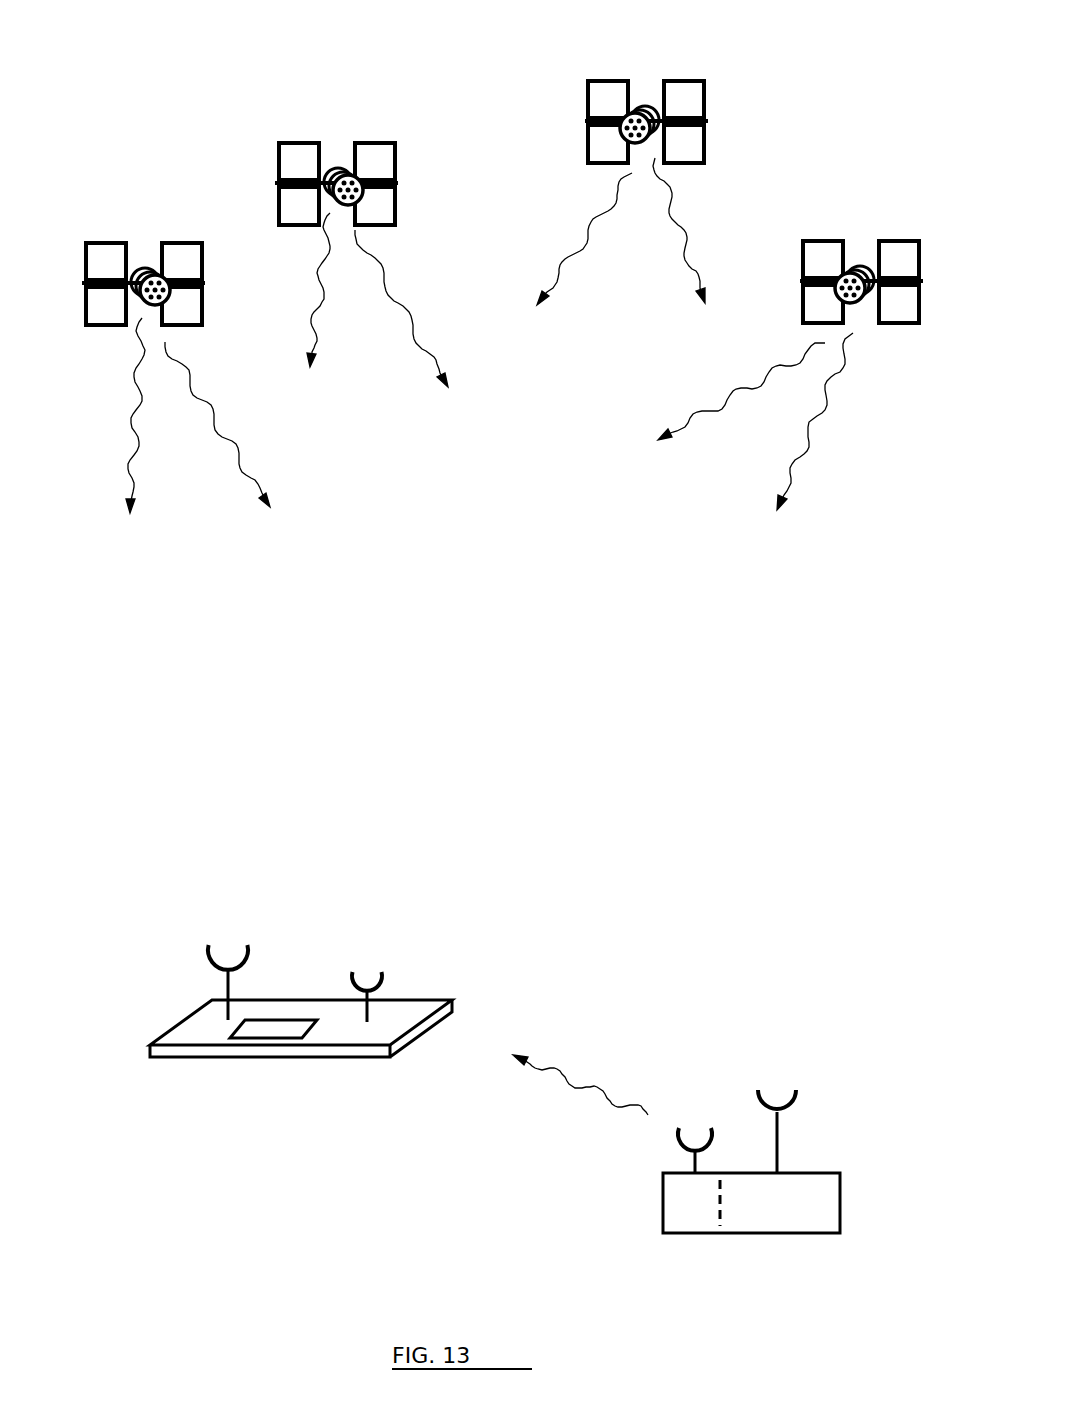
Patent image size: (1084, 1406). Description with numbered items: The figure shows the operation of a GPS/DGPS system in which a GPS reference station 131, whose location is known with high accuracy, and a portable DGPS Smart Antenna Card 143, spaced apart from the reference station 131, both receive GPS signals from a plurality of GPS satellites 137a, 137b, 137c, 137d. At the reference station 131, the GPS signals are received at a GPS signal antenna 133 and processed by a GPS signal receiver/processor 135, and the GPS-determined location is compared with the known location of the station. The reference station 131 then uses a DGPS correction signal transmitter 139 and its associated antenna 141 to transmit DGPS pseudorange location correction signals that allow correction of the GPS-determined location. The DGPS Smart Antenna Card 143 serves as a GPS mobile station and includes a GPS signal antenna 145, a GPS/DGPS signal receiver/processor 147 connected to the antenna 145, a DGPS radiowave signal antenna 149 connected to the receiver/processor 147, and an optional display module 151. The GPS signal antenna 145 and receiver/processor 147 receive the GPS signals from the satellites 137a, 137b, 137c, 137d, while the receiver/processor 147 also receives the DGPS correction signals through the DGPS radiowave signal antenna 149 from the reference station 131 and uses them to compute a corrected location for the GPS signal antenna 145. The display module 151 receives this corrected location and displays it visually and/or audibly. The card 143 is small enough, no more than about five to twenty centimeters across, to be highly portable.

The GPS reference station 131 is at (717, 1086).
The GPS signal antenna 133 is at (822, 1131).
The GPS signal receiver/processor 135 is at (793, 1206).
The GPS satellite 137a is at (148, 270).
The GPS satellite 137b is at (345, 172).
The GPS satellite 137c is at (648, 107).
The GPS satellite 137d is at (855, 267).
The DGPS correction signal transmitter 139 is at (697, 1206).
The antenna 141 is at (691, 1158).
The DGPS Smart Antenna Card 143 is at (270, 947).
The GPS signal antenna 145 is at (226, 988).
The GPS/DGPS signal receiver/processor 147 is at (193, 1033).
The DGPS radiowave signal antenna 149 is at (408, 994).
The display module 151 is at (273, 1028).